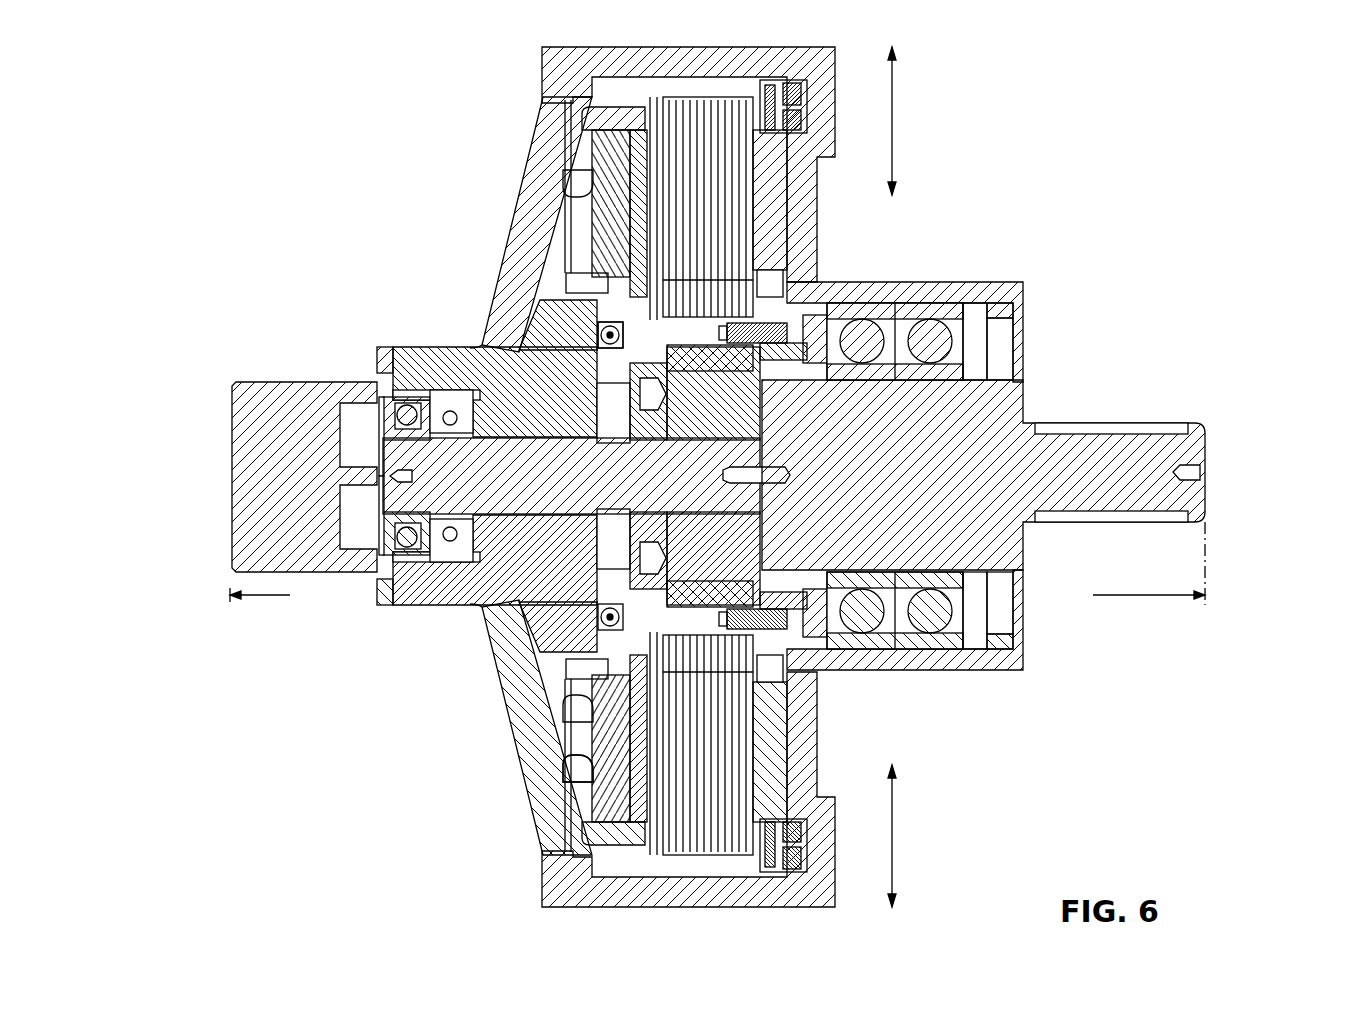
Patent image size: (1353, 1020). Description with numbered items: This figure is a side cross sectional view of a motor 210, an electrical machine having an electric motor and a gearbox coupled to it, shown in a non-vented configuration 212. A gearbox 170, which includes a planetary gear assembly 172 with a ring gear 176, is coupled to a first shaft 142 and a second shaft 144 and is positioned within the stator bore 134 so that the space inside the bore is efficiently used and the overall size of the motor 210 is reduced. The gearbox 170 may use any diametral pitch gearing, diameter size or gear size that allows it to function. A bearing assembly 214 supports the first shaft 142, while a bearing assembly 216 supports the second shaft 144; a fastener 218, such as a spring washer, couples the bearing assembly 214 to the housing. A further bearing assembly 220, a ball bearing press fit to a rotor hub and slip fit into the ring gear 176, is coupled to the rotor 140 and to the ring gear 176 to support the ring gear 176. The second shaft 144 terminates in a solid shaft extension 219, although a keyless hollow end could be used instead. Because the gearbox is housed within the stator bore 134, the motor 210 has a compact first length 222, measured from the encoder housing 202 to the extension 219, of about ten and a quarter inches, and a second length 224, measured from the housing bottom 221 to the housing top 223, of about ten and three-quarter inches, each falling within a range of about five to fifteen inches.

The stator bore 134 is at (688, 322).
The rotor 140 is at (545, 597).
The first shaft 142 is at (410, 500).
The second shaft 144 is at (1152, 516).
The gearbox 170 is at (700, 600).
The planetary gear assembly 172 is at (600, 344).
The ring gear 176 is at (791, 320).
The encoder housing 202 is at (232, 470).
The motor 210 is at (1092, 80).
The non-vented configuration 212 is at (532, 144).
The bearing assembly 214 is at (405, 410).
The bearing assembly 216 is at (950, 607).
The fastener 218 is at (378, 554).
The solid shaft extension 219 is at (1208, 447).
The bearing assembly 220 is at (598, 334).
The housing bottom 221 is at (562, 905).
The first length 222 is at (287, 601).
The housing top 223 is at (750, 58).
The second length 224 is at (895, 796).